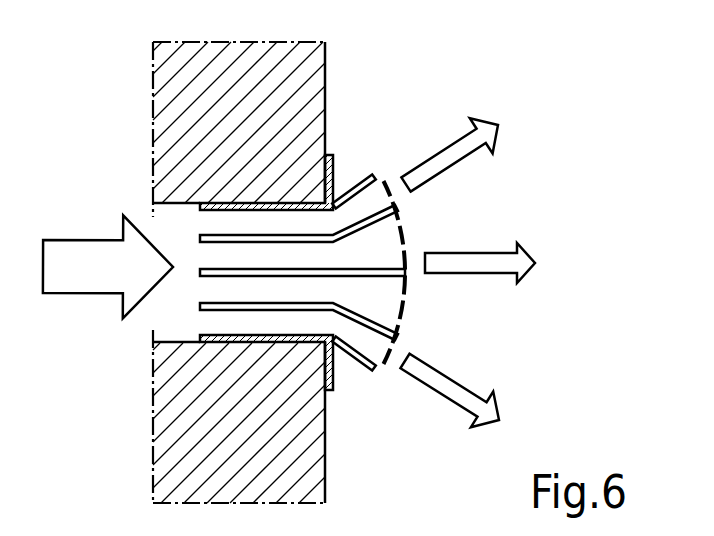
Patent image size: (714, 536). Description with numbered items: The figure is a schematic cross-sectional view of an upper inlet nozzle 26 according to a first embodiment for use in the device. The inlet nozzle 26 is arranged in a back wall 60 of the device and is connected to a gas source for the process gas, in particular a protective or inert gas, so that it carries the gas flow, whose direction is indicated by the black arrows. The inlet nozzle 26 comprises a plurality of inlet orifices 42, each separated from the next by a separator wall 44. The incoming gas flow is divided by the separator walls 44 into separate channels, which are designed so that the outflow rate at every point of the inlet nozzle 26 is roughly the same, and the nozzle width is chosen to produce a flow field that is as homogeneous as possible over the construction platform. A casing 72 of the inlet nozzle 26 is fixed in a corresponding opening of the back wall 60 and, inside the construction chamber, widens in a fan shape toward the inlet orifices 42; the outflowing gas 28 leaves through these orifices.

The inlet nozzle 26 is at (568, 74).
The air flow 28 is at (456, 148).
The inlet orifices 42 is at (389, 190).
The separator wall 44 is at (230, 270).
The back wall 60 is at (327, 80).
The casing 72 is at (222, 205).